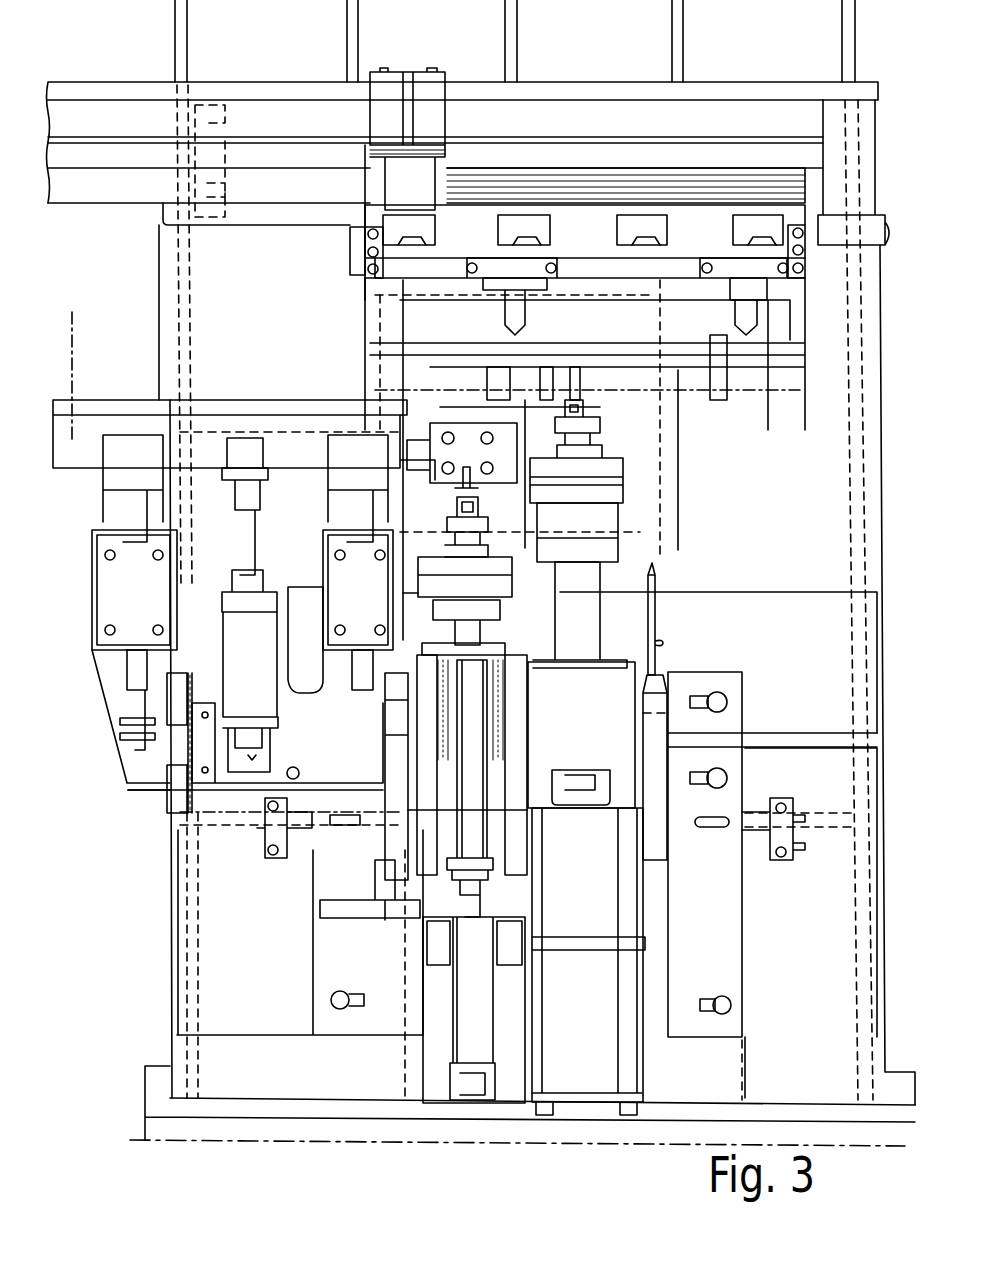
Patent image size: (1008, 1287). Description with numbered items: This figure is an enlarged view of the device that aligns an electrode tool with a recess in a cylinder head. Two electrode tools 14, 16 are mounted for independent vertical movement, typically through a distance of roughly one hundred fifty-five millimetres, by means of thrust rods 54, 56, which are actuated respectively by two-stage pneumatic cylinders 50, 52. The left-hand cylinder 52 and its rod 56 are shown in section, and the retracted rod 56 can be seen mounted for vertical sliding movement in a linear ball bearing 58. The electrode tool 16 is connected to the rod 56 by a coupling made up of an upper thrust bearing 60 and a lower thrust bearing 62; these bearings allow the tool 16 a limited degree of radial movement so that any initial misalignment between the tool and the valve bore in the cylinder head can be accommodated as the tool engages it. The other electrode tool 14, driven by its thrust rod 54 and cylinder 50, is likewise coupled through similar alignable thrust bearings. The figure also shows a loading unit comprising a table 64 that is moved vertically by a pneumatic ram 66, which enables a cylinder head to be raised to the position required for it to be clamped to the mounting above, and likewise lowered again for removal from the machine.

The electrode tool 14 is at (590, 425).
The electrode tool 16 is at (483, 523).
The two-stage pneumatic cylinder 50 is at (602, 972).
The two-stage pneumatic cylinder 52 is at (427, 968).
The thrust rod 54 is at (593, 623).
The thrust rod 56 is at (450, 780).
The linear ball bearing 58 is at (440, 712).
The upper thrust bearing 60 is at (510, 603).
The lower thrust bearing 62 is at (600, 640).
The table 64 is at (238, 398).
The pneumatic ram 66 is at (258, 671).